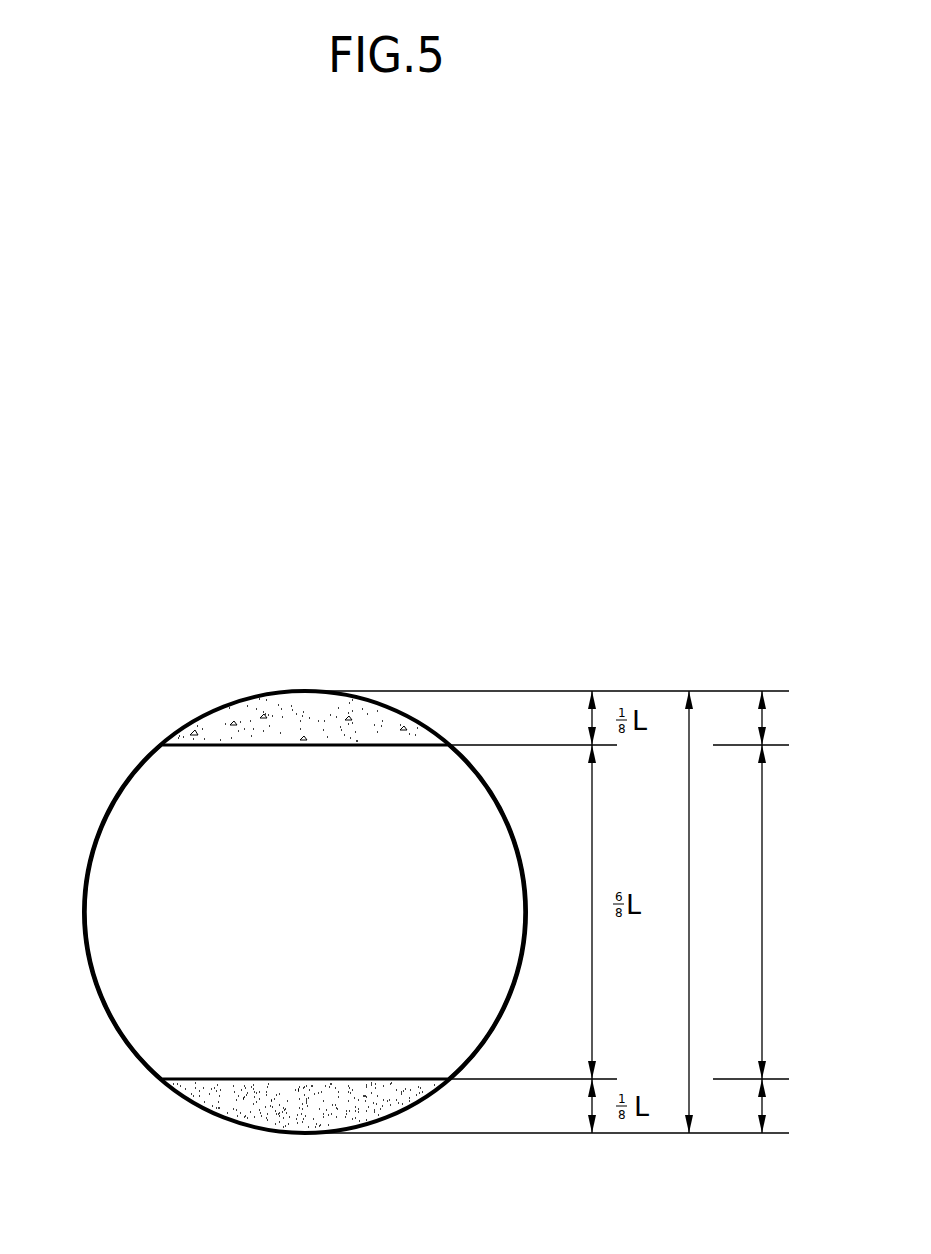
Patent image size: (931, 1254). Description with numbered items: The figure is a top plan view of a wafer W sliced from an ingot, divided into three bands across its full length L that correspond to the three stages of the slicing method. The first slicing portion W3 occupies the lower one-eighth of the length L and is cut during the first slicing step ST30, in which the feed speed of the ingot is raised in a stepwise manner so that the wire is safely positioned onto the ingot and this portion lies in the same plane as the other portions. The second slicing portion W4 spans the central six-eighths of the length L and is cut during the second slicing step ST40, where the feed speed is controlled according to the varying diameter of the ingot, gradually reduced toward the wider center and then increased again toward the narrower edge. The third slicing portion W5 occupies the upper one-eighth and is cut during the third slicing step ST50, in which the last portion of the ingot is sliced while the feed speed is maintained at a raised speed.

The wafer W is at (380, 637).
The third slicing portion W5 is at (262, 708).
The second slicing portion W4 is at (113, 950).
The first slicing portion W3 is at (300, 1117).
The wafer diameter length L is at (705, 912).
The third slicing step ST50 is at (797, 718).
The second slicing step ST40 is at (797, 912).
The first slicing step ST30 is at (800, 1106).